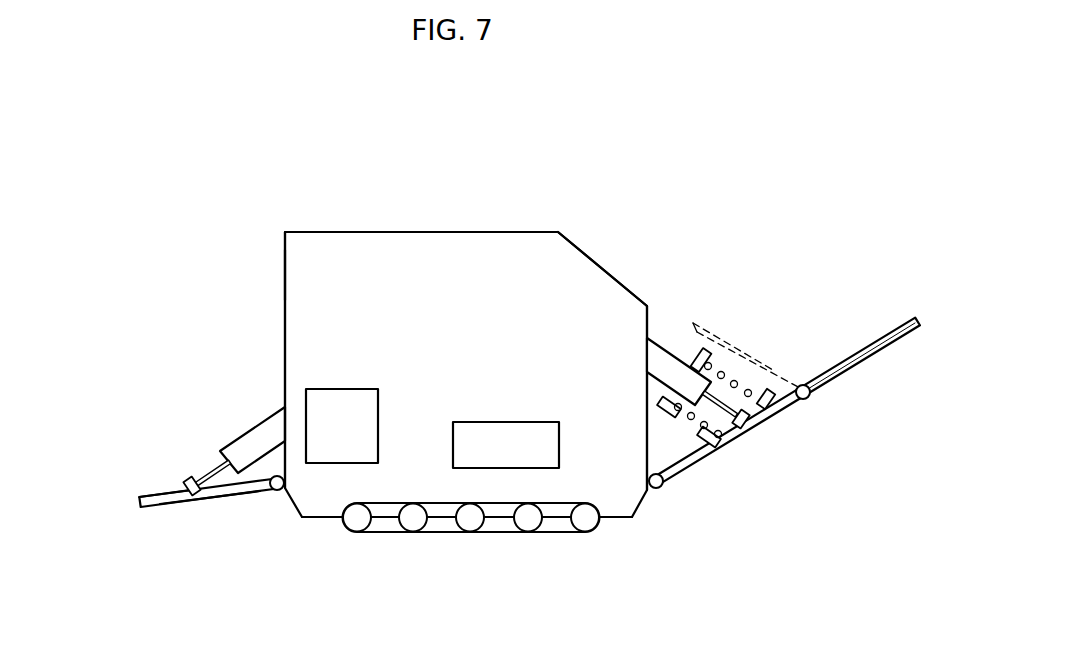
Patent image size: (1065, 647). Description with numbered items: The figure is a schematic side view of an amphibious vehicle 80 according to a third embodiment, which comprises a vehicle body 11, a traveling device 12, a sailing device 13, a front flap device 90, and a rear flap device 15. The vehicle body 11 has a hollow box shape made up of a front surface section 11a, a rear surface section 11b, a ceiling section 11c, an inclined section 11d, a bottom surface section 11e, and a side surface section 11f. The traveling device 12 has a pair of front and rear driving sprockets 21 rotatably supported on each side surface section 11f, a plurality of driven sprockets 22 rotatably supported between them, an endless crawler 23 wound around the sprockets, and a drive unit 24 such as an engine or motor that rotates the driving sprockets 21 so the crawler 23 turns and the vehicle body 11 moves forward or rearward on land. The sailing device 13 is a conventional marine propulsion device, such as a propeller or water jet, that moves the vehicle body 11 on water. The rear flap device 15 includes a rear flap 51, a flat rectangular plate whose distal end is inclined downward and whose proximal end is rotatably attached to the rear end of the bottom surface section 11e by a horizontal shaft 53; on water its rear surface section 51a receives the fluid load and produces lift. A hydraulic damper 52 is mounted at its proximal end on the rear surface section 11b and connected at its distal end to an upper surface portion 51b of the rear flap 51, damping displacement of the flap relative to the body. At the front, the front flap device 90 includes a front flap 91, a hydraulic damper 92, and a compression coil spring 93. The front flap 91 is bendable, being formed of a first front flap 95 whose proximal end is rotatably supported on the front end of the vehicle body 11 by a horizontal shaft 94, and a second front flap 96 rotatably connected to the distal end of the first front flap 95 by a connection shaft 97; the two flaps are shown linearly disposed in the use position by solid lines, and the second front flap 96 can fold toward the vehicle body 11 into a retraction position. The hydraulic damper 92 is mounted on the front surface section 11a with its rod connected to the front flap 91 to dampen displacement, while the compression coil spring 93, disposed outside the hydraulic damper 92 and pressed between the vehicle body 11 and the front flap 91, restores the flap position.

The amphibious vehicle 80 is at (230, 208).
The vehicle body 11 is at (474, 224).
The front surface section 11a is at (650, 317).
The rear surface section 11b is at (285, 288).
The ceiling section 11c is at (403, 232).
The inclined section 11d is at (565, 237).
The bottom surface section 11e is at (317, 523).
The side surface section 11f is at (340, 273).
The traveling device 12 is at (611, 530).
The sailing device 13 is at (299, 386).
The rear flap device 15 is at (176, 460).
The driving sprocket 21 is at (357, 523).
The driven sprocket 22 is at (408, 523).
The endless crawler 23 is at (503, 533).
The drive unit 24 is at (500, 422).
The rear flap 51 is at (170, 505).
The rear surface section of rear flap 51a is at (213, 500).
The upper surface portion of rear flap 51b is at (160, 493).
The hydraulic damper 52 is at (253, 438).
The horizontal shaft 53 is at (276, 492).
The front flap device 90 is at (891, 307).
The front flap 91 is at (867, 523).
The hydraulic damper 92 is at (667, 362).
The compression coil spring 93 is at (752, 388).
The horizontal shaft 94 is at (663, 497).
The first front flap 95 is at (779, 406).
The second front flap 96 is at (848, 372).
The connection shaft 97 is at (804, 400).